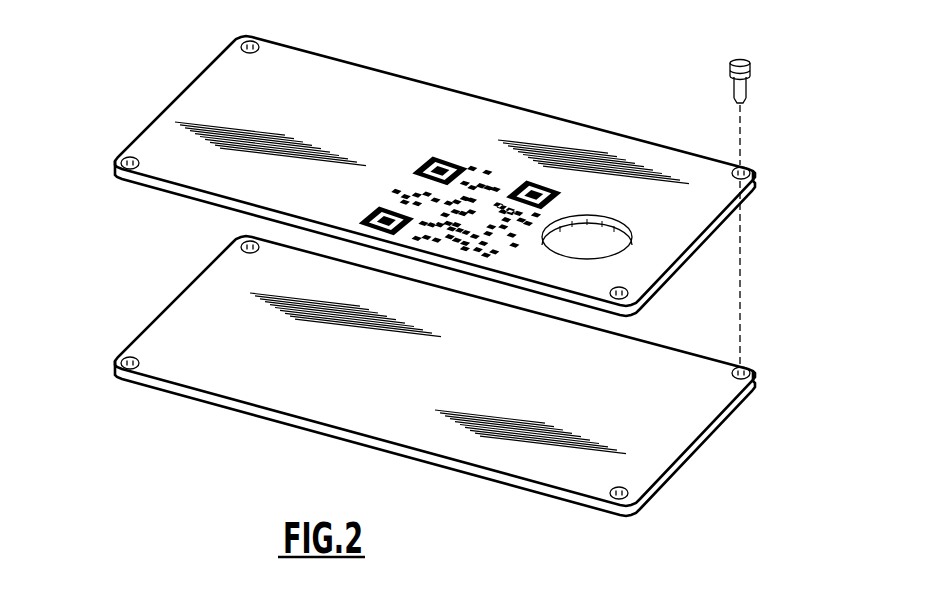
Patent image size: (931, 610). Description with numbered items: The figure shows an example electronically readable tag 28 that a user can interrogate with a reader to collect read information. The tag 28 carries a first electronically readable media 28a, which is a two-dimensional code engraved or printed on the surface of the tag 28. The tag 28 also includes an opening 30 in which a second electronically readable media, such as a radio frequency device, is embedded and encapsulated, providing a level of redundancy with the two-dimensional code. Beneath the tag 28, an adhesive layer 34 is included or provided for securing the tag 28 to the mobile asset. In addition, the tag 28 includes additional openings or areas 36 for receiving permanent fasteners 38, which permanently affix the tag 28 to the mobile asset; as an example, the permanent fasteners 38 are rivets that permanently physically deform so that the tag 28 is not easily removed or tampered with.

The electronically readable tag 28 is at (116, 208).
The first electronically readable media 28a is at (382, 178).
The opening 30 is at (596, 243).
The adhesive layer 34 is at (661, 478).
The additional openings or areas 36 is at (757, 169).
The permanent fasteners 38 is at (752, 88).